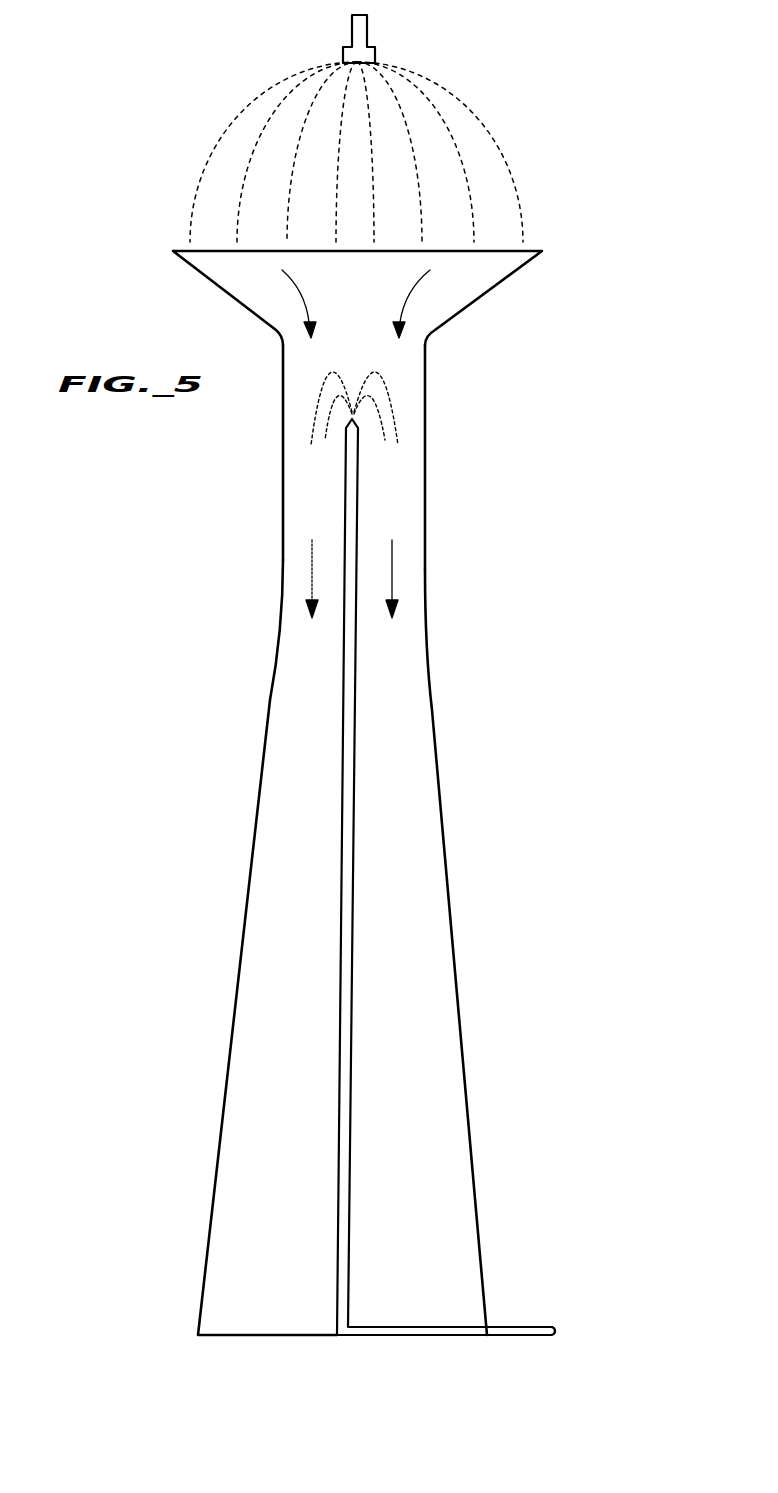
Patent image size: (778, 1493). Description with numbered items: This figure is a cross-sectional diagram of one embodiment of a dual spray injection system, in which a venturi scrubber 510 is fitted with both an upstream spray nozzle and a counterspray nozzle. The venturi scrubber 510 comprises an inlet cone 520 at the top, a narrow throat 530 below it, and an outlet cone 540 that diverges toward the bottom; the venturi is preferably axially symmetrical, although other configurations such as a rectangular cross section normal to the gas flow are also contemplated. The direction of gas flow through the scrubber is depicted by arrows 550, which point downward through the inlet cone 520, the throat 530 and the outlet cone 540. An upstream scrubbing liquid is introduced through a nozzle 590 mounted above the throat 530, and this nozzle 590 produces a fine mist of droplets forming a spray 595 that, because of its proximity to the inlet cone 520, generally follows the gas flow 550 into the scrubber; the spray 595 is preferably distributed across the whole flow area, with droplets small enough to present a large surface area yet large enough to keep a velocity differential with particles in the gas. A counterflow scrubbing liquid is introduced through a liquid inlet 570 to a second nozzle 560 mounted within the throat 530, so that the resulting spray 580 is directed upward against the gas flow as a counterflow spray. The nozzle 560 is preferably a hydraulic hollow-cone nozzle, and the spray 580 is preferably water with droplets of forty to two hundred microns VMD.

The venturi scrubber 510 is at (373, 793).
The inlet cone 520 is at (473, 305).
The throat 530 is at (425, 503).
The outlet cone 540 is at (432, 710).
The gas flow direction arrows 550 is at (418, 290).
The nozzle 560 is at (360, 427).
The liquid inlet 570 is at (527, 1325).
The spray 580 is at (388, 376).
The nozzle 590 is at (376, 50).
The spray 595 is at (490, 136).